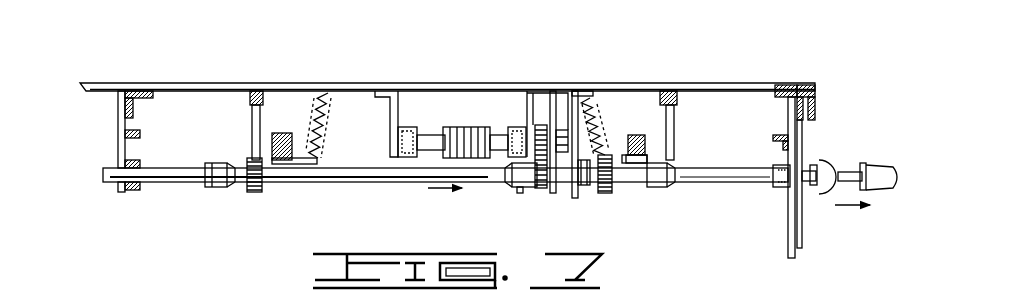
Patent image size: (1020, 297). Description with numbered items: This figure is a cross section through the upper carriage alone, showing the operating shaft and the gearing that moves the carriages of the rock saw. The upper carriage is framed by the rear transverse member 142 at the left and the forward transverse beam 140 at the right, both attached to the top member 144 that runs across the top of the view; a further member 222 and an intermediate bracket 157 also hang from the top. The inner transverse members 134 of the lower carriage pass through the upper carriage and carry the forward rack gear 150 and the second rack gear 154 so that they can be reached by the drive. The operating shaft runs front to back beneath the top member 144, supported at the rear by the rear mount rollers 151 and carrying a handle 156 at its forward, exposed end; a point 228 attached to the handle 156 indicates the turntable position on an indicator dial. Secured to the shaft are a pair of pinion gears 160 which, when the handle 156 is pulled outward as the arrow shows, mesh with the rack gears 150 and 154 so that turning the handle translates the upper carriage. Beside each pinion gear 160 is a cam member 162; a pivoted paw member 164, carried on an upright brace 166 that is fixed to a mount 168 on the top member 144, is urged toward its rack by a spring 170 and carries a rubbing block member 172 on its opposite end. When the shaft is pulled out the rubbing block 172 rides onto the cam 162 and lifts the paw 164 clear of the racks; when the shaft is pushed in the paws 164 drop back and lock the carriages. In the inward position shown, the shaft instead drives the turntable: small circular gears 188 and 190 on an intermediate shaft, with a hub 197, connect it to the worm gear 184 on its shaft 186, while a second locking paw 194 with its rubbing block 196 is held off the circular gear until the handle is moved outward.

The transverse members 134 is at (140, 134).
The forward transverse beam 140 is at (778, 92).
The rear transverse member 142 is at (136, 92).
The top member 144 is at (368, 88).
The forward rack gear 150 is at (628, 138).
The rear mount rollers 151 is at (140, 190).
The rack gear 154 is at (178, 173).
The handle 156 is at (882, 163).
The support plate 157 is at (572, 196).
The pinion gears 160 is at (256, 192).
The cam member 162 is at (225, 176).
The pivoted paw member 164 is at (307, 165).
The upright brace 166 is at (250, 111).
The mount 168 is at (257, 92).
The spring 170 is at (330, 112).
The rubbing block member 172 is at (244, 165).
The worm gear 184 is at (480, 125).
The shaft 186 is at (432, 127).
The small circular gear 188 is at (543, 124).
The small circular gear 190 is at (546, 188).
The paw 194 is at (553, 140).
The rubbing block 196 is at (520, 193).
The hub 197 is at (512, 183).
The end block 222 is at (812, 92).
The point 228 is at (813, 190).